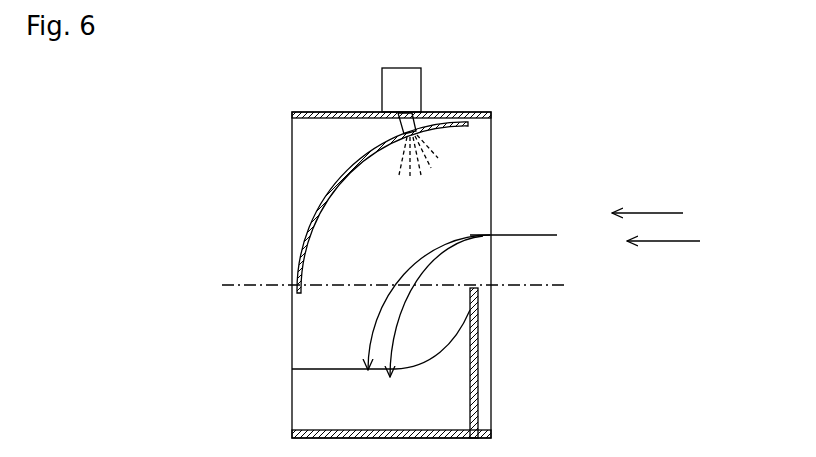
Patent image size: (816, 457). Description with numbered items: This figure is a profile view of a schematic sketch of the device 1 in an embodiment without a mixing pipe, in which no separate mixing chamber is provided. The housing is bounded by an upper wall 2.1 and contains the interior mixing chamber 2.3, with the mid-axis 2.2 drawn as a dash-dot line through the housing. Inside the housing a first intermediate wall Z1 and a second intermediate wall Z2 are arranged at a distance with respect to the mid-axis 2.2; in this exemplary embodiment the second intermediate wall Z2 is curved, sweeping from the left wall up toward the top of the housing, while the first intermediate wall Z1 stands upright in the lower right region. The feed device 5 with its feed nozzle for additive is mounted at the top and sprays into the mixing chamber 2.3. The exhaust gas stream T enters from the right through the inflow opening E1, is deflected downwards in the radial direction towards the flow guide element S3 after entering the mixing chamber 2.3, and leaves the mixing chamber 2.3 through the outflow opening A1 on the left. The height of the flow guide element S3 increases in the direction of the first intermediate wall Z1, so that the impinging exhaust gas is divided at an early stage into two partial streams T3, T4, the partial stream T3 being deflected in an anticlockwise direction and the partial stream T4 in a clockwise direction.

The exhaust gas treatment device 1 is at (277, 78).
The top wall 2.1 is at (330, 113).
The mid-axis 2.2 is at (527, 286).
The mixing chamber 2.3 is at (392, 218).
The feed device 5 is at (407, 103).
The second intermediate wall Z2 is at (326, 192).
The first intermediate wall Z1 is at (478, 347).
The inflow opening E1 is at (478, 183).
The exhaust gas stream T is at (661, 207).
The partial stream T3 is at (402, 279).
The partial stream T4 is at (405, 317).
The outflow opening A1 is at (310, 349).
The flow guide element S3 is at (386, 420).